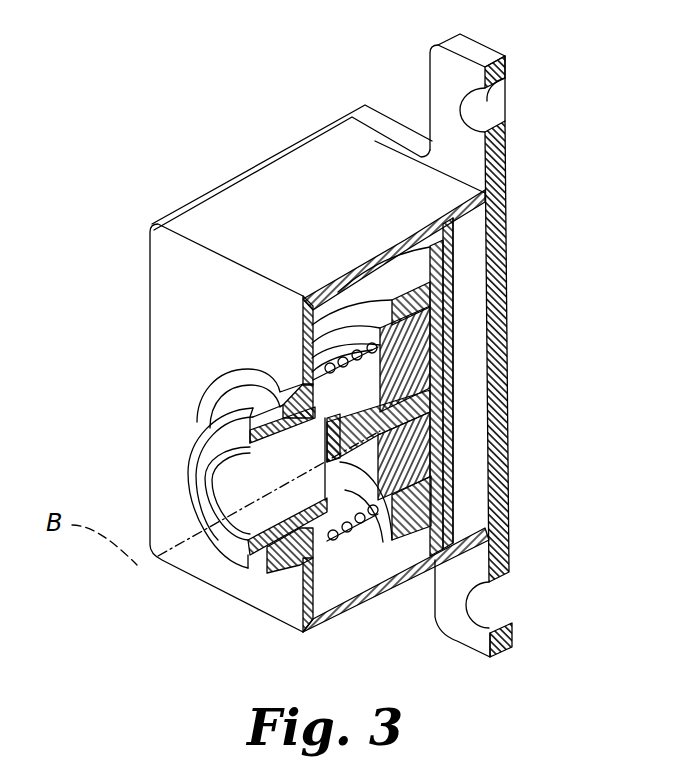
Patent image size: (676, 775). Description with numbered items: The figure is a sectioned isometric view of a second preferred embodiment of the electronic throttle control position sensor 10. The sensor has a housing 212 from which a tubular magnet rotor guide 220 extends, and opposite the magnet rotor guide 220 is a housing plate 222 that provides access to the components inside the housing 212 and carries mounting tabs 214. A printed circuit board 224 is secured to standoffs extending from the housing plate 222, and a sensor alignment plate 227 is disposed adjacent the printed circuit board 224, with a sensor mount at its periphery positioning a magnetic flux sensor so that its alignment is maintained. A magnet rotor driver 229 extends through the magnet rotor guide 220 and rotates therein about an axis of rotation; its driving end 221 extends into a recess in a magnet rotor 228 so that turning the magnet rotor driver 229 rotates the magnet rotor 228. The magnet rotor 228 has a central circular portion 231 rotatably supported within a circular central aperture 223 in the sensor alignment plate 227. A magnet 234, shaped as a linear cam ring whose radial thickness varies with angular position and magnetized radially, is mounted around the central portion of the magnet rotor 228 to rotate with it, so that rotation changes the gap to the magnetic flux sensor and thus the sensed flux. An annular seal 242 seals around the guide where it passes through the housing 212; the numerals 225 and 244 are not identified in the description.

The electronic throttle control position sensor 10 is at (208, 133).
The housing 212 is at (147, 303).
The mounting tabs 214 is at (505, 67).
The magnet rotor guide 220 is at (197, 437).
The driving end 221 is at (450, 438).
The housing plate 222 is at (508, 418).
The circular central aperture 223 is at (450, 452).
The printed circuit board 224 is at (450, 281).
The spacer 225 is at (450, 384).
The sensor alignment plate 227 is at (450, 306).
The magnet rotor 228 is at (450, 334).
The magnet rotor driver 229 is at (205, 472).
The central circular portion 231 is at (450, 376).
The magnet 234 is at (450, 250).
The annular seal 242 is at (300, 368).
The coil 244 is at (315, 330).